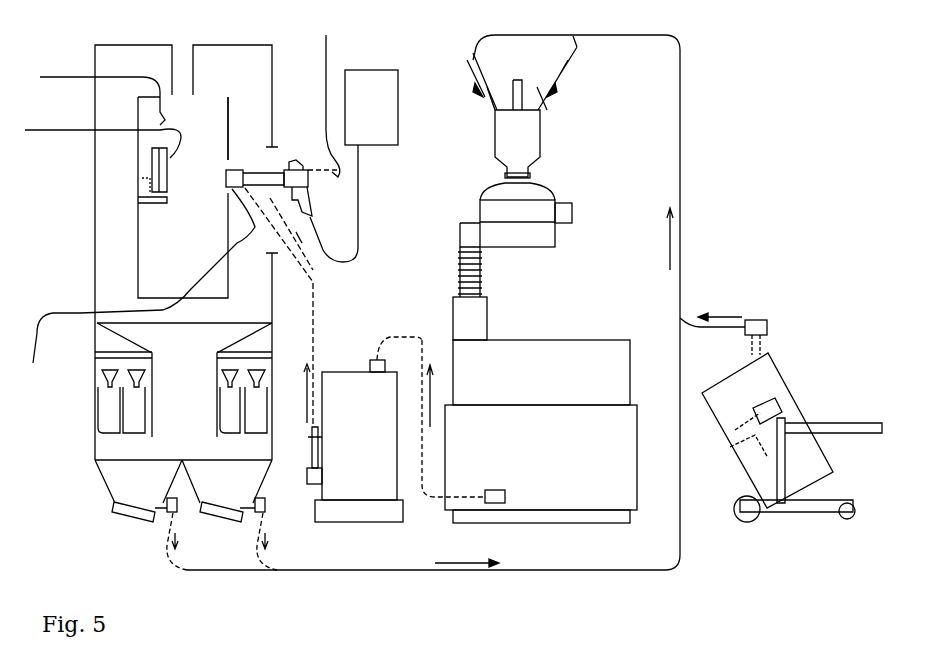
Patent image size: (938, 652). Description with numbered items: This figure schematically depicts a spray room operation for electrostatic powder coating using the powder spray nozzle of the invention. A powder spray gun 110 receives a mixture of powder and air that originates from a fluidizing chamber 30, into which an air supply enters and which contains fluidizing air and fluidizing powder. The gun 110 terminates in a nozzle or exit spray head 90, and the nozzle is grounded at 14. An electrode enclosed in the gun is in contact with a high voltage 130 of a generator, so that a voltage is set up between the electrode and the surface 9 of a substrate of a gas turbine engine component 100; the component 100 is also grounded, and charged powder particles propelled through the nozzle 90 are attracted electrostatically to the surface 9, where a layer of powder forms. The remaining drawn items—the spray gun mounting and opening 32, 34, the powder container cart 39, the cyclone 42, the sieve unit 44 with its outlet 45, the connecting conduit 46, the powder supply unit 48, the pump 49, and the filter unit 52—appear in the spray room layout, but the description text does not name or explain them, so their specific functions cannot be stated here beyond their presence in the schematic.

The surface 9 is at (95, 140).
The ground 14 is at (145, 192).
The fluidizing chamber 30 is at (152, 267).
The spray gun 32 is at (220, 194).
The booth opening 34 is at (236, 80).
The powder container cart 39 is at (782, 372).
The cyclone separator 42 is at (542, 133).
The sieve unit 44 is at (540, 247).
The sieve outlet 45 is at (568, 200).
The connecting conduit 46 is at (487, 320).
The powder supply unit 48 is at (630, 367).
The powder pump 49 is at (368, 522).
The filter unit 52 is at (98, 452).
The nozzle 90 is at (140, 285).
The gas turbine engine component 100 is at (87, 97).
The powder spray gun 110 is at (320, 97).
The high voltage 130 is at (398, 110).